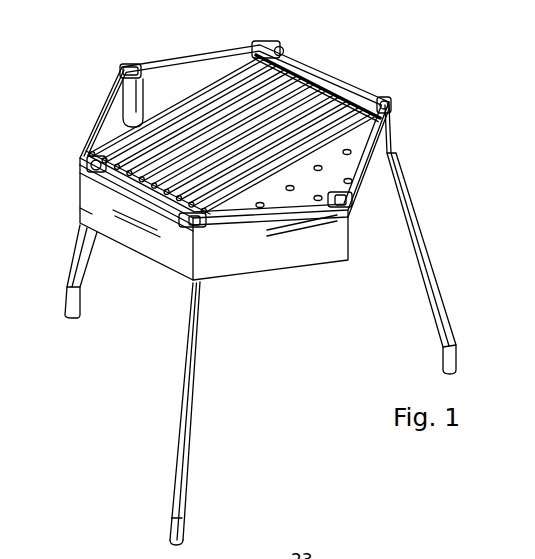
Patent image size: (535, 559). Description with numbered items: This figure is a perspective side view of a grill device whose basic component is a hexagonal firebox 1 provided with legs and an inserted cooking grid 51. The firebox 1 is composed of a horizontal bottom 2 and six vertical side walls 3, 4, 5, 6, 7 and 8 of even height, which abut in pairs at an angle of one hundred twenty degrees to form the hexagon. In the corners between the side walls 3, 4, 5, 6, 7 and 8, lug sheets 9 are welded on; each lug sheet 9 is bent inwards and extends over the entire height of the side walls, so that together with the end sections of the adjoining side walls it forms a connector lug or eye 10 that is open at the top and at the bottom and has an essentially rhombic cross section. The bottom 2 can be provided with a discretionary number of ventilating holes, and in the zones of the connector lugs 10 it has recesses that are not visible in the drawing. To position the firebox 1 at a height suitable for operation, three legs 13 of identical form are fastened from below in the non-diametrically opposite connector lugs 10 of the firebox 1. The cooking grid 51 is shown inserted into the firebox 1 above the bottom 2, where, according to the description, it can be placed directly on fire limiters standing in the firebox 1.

The hexagonal firebox 1 is at (239, 110).
The horizontal bottom 2 is at (300, 202).
The vertical side wall 3 is at (390, 155).
The vertical side wall 4 is at (296, 260).
The vertical side wall 5 is at (134, 245).
The vertical side wall 6 is at (106, 117).
The vertical side wall 7 is at (197, 60).
The vertical side wall 8 is at (320, 72).
The lug sheet 9 is at (140, 70).
The connector lug 10 is at (128, 66).
The leg 13 is at (76, 255).
The cooking grid 51 is at (80, 212).